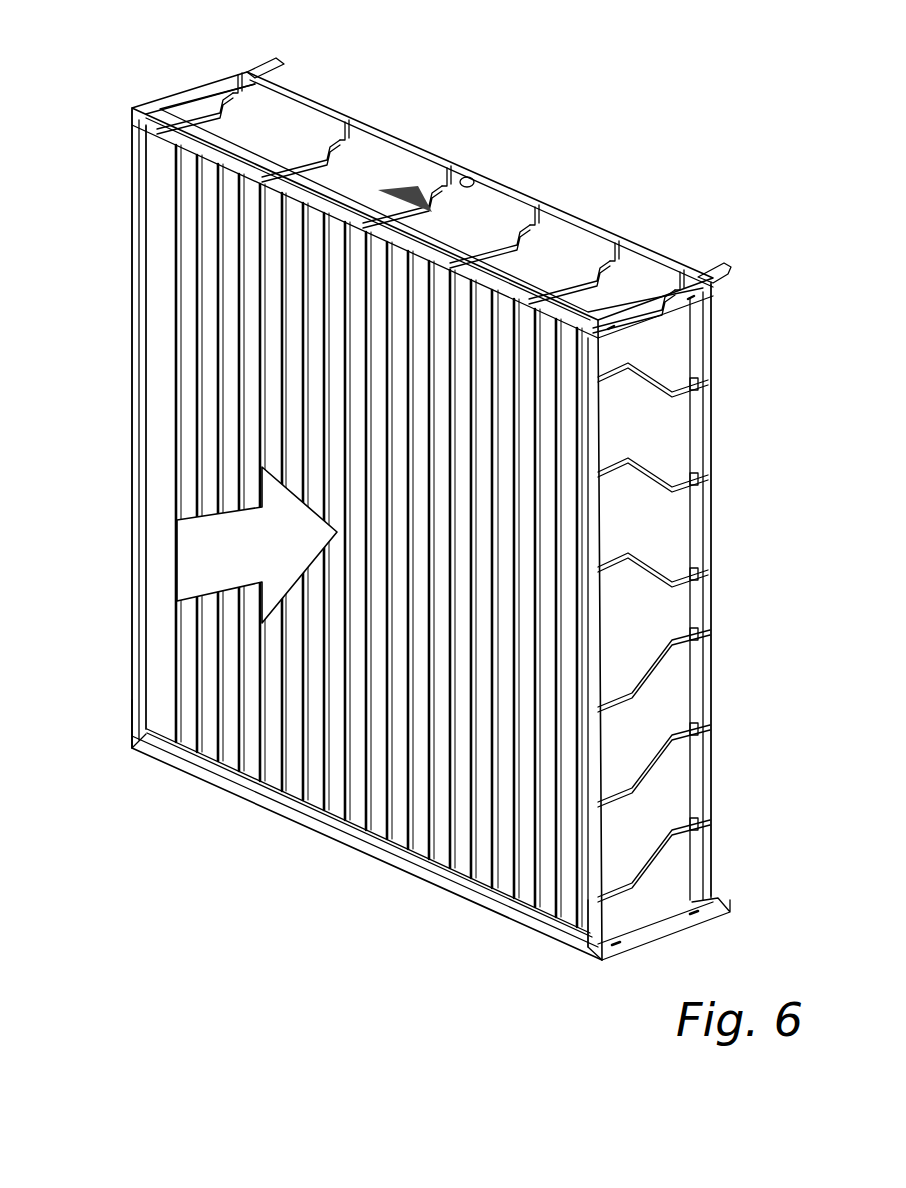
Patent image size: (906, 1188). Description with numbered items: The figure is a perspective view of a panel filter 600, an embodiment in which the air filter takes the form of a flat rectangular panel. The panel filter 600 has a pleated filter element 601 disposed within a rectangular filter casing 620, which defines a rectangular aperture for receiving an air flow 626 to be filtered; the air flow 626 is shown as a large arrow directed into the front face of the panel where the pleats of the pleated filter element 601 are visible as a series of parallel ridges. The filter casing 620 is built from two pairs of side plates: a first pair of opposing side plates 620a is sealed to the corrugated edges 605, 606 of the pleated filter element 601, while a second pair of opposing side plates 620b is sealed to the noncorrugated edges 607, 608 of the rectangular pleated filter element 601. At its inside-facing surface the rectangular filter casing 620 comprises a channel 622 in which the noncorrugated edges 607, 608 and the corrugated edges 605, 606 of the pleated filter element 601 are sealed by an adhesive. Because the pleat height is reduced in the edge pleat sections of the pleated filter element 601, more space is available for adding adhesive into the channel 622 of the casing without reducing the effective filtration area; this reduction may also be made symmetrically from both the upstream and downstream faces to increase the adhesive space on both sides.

The panel filter 600 is at (158, 61).
The pleated filter element 601 is at (165, 215).
The corrugated edge 605 is at (358, 828).
The corrugated edge 606 is at (430, 265).
The noncorrugated edge 607 is at (585, 925).
The noncorrugated edge 608 is at (157, 280).
The rectangular filter casing 620 is at (350, 124).
The first pair of opposing side plates 620a is at (440, 188).
The second pair of opposing side plates 620b is at (140, 370).
The channel 622 is at (160, 690).
The air flow 626 is at (177, 558).